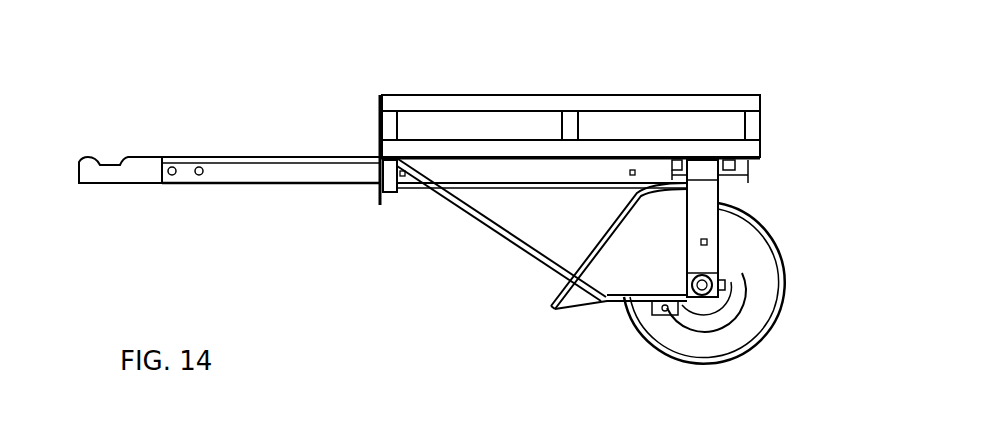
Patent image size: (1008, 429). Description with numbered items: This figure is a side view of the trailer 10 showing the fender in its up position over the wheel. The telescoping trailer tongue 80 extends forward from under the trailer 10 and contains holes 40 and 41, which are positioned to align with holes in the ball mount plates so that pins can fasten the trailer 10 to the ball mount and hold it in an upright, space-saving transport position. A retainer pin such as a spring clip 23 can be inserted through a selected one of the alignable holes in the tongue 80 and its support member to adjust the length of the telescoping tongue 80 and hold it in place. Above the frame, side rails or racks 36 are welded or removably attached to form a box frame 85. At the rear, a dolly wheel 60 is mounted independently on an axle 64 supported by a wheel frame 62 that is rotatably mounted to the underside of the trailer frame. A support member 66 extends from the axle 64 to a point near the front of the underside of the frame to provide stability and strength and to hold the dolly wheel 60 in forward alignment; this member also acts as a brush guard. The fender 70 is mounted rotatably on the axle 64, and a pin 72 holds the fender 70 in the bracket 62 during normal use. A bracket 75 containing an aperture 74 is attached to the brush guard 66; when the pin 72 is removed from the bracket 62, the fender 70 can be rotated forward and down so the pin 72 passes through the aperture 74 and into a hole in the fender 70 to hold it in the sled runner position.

The trailer 10 is at (316, 87).
The side rails or racks 36 is at (600, 150).
The trailer tongue 80 is at (260, 168).
The hole 40 is at (173, 176).
The hole 41 is at (200, 176).
The box frame 85 is at (488, 165).
The spring clip 23 is at (404, 178).
The support member 66 is at (515, 240).
The fender 70 is at (598, 298).
The wheel frame 62 is at (705, 220).
The pin 72 is at (708, 241).
The axle 64 is at (712, 278).
The dolly wheel 60 is at (723, 340).
The aperture 74 is at (652, 318).
The bracket 75 is at (665, 318).